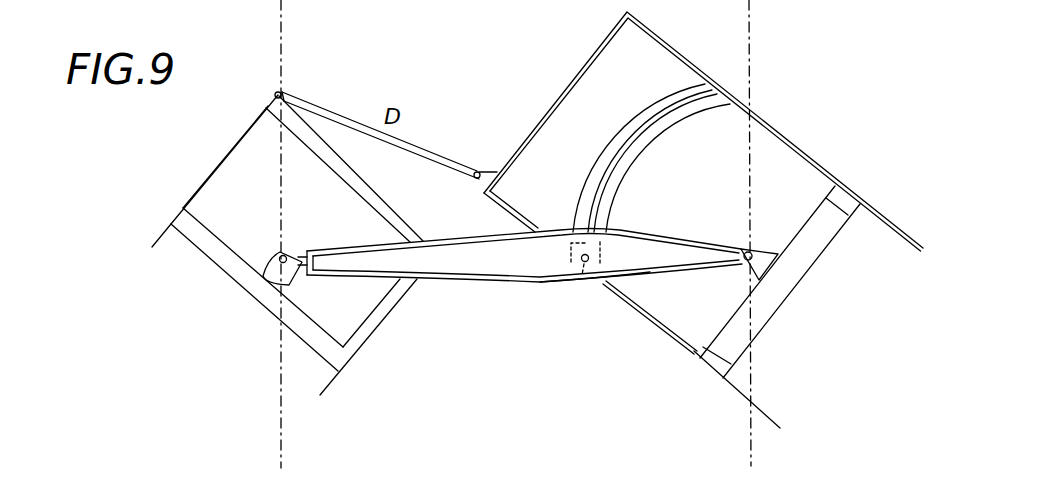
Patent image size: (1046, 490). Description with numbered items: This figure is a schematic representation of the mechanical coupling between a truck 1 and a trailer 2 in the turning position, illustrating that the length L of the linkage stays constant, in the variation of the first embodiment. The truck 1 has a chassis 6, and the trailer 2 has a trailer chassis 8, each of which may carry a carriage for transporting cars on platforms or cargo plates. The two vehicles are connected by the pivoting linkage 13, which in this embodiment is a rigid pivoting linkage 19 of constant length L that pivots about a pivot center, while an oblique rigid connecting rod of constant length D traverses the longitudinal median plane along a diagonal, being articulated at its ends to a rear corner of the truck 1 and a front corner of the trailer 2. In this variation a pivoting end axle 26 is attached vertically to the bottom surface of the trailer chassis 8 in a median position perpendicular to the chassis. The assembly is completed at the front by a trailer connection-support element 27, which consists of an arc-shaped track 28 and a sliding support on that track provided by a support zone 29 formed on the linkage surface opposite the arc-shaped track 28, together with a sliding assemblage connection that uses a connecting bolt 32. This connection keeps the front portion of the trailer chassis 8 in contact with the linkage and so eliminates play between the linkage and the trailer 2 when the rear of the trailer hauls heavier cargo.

The truck 1 is at (184, 179).
The trailer 2 is at (764, 105).
The chassis 6 is at (162, 234).
The trailer chassis 8 is at (777, 154).
The pivoting linkage 13 is at (387, 337).
The rigid pivoting linkage 19 is at (450, 295).
The pivoting end axle 26 is at (771, 238).
The trailer connection-support element 27 is at (558, 295).
The arc-shaped track 28 is at (683, 99).
The support zone 29 is at (572, 248).
The connecting bolt 32 is at (584, 262).